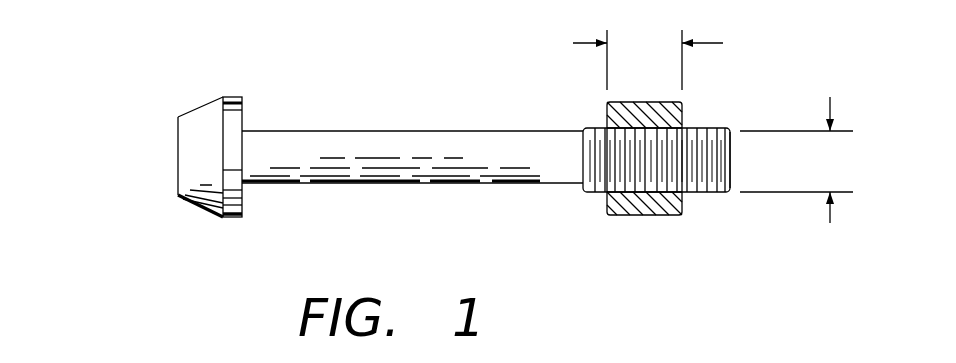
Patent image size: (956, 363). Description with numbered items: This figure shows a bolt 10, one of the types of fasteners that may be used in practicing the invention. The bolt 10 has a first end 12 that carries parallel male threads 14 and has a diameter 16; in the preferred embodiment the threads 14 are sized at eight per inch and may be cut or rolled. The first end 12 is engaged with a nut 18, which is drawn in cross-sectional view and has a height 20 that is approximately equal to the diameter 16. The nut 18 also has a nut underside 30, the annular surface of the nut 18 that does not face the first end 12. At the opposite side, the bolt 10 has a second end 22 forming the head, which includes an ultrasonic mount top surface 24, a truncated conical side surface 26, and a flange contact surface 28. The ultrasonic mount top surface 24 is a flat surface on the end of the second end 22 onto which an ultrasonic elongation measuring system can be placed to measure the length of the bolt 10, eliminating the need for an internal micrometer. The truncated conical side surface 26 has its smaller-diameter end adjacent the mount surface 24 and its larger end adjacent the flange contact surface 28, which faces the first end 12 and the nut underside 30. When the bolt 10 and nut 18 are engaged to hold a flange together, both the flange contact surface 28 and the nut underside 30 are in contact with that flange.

The bolt 10 is at (435, 112).
The first end 12 is at (731, 172).
The parallel male threads 14 is at (705, 128).
The diameter 16 is at (796, 160).
The nut 18 is at (607, 118).
The height 20 is at (648, 60).
The second end 22 is at (202, 110).
The ultrasonic mount top surface 24 is at (178, 163).
The truncated conical side surface 26 is at (200, 207).
The flange contact surface 28 is at (242, 118).
The nut underside 30 is at (607, 204).